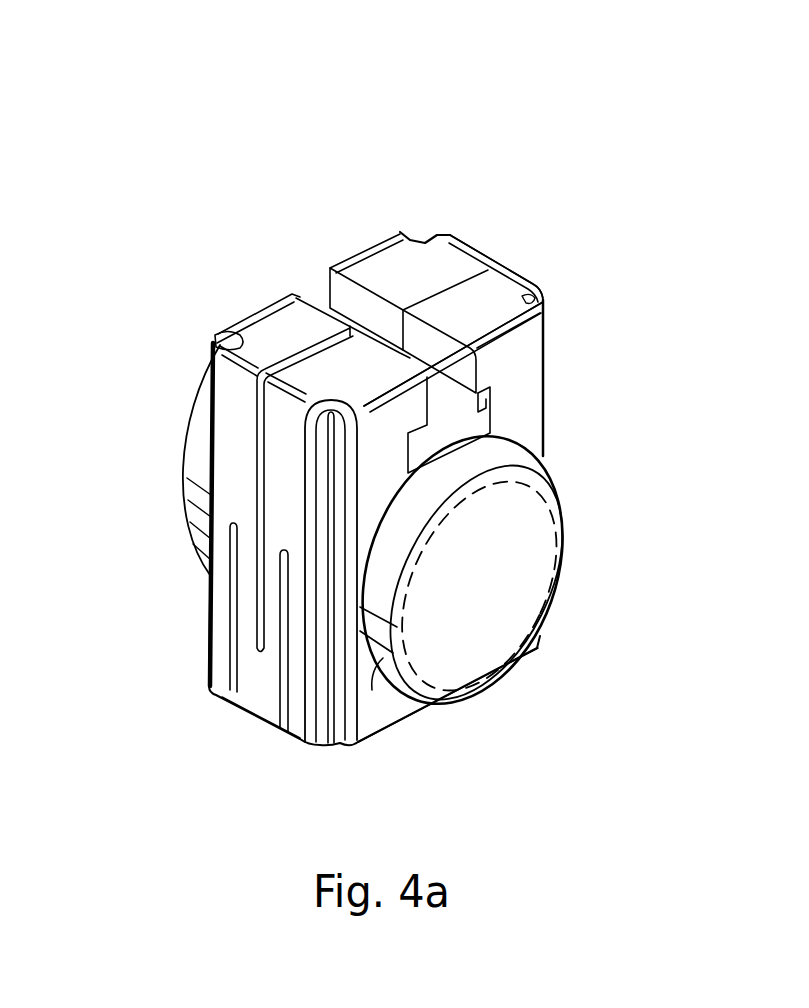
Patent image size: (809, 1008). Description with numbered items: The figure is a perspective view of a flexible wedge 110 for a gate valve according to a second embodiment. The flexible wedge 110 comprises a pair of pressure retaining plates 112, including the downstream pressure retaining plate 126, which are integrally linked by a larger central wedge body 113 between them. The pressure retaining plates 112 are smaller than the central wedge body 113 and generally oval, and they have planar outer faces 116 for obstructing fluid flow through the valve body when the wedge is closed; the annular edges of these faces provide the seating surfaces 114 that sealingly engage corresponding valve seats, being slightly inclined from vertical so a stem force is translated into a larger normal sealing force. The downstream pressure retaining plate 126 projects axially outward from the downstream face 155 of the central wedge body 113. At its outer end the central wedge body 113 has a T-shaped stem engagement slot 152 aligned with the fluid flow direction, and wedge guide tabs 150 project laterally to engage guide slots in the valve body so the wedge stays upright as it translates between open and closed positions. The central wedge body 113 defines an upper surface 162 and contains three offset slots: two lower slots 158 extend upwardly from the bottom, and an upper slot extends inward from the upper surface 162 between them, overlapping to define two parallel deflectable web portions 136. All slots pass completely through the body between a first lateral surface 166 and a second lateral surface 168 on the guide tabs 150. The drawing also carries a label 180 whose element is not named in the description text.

The flexible wedge 110 is at (521, 135).
The upper surface 162 is at (400, 262).
The central wedge body 113 is at (530, 229).
The second lateral surface 168 is at (520, 287).
The stem engagement slot 152 is at (510, 410).
The downstream face 155 is at (523, 413).
The pressure retaining plates 112 is at (517, 450).
The seating surfaces 114 is at (560, 517).
The outer faces 116 is at (545, 588).
The guide rail 180 is at (292, 372).
The first lateral surface 166 is at (237, 427).
The wedge guide tabs 150 is at (318, 465).
The deflectable web portions 136 is at (272, 577).
The lower slots 158 is at (280, 693).
The downstream pressure retaining plate 126 is at (380, 666).